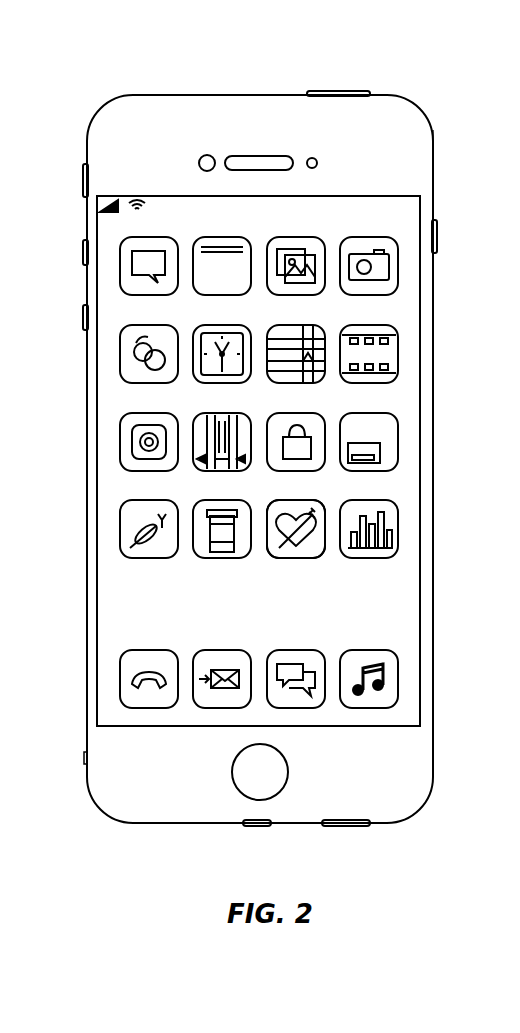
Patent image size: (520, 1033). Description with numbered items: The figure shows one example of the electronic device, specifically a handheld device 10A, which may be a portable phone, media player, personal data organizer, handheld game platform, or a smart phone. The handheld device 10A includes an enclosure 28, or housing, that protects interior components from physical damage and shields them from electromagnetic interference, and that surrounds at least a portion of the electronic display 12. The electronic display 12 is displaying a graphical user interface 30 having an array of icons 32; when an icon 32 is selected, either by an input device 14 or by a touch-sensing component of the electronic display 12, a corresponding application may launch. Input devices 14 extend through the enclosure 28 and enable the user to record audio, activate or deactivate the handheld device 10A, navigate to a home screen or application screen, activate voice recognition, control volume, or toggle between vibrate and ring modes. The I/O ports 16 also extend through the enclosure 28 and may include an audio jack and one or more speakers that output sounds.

The handheld device 10A is at (92, 97).
The electronic display 12 is at (421, 496).
The input devices 14 is at (340, 92).
The I/O ports 16 is at (170, 824).
The enclosure 28 is at (434, 162).
The graphical user interface 30 is at (404, 399).
The icon 32 is at (293, 559).